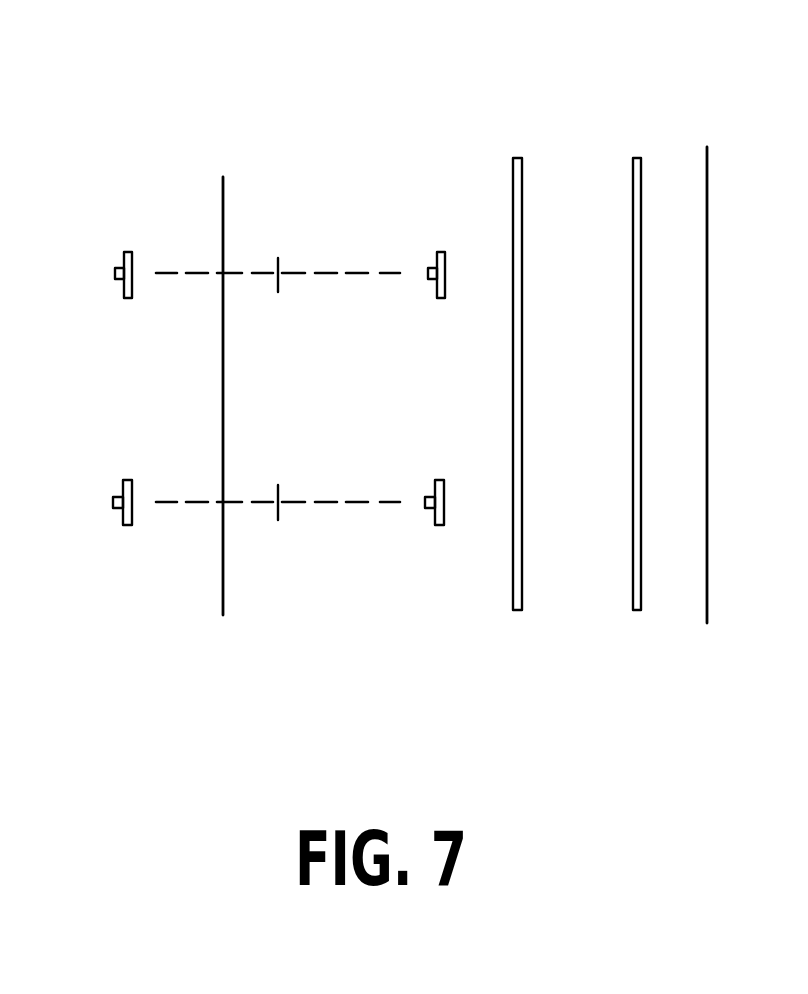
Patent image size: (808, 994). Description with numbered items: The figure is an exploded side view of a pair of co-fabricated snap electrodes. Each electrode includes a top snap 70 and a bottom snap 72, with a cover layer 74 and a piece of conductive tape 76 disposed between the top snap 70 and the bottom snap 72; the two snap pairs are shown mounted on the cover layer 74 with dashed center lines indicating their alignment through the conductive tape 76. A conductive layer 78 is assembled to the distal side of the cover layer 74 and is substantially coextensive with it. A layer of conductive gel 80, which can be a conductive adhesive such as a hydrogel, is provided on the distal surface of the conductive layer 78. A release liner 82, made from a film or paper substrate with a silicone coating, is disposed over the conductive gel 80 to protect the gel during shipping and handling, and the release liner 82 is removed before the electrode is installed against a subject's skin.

The top snap 70 is at (118, 510).
The bottom snap 72 is at (427, 517).
The cover layer 74 is at (223, 173).
The conductive tape 76 is at (278, 256).
The conductive layer 78 is at (518, 612).
The conductive gel 80 is at (637, 612).
The release liner 82 is at (707, 147).